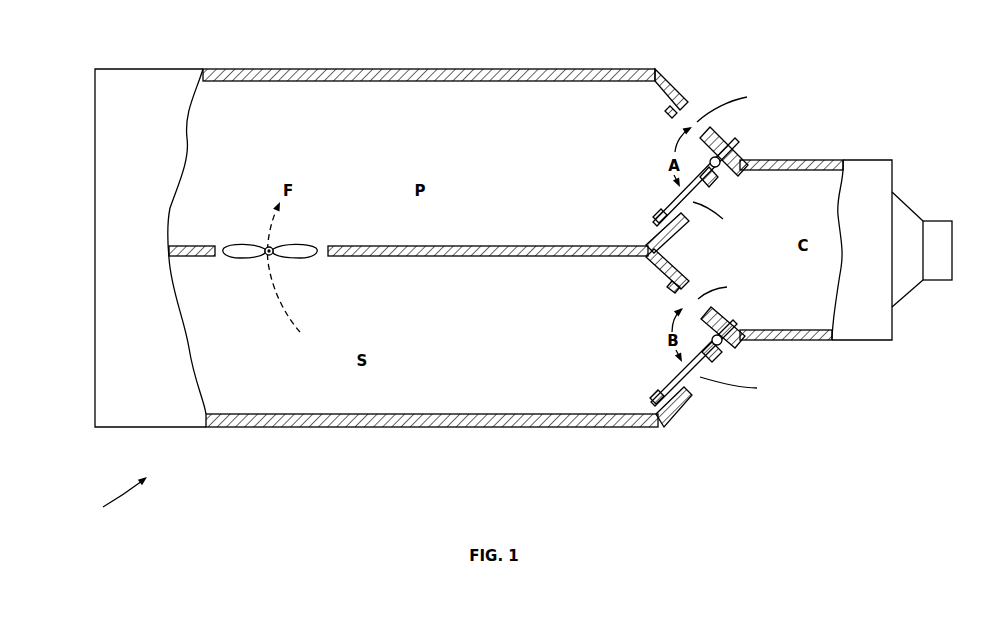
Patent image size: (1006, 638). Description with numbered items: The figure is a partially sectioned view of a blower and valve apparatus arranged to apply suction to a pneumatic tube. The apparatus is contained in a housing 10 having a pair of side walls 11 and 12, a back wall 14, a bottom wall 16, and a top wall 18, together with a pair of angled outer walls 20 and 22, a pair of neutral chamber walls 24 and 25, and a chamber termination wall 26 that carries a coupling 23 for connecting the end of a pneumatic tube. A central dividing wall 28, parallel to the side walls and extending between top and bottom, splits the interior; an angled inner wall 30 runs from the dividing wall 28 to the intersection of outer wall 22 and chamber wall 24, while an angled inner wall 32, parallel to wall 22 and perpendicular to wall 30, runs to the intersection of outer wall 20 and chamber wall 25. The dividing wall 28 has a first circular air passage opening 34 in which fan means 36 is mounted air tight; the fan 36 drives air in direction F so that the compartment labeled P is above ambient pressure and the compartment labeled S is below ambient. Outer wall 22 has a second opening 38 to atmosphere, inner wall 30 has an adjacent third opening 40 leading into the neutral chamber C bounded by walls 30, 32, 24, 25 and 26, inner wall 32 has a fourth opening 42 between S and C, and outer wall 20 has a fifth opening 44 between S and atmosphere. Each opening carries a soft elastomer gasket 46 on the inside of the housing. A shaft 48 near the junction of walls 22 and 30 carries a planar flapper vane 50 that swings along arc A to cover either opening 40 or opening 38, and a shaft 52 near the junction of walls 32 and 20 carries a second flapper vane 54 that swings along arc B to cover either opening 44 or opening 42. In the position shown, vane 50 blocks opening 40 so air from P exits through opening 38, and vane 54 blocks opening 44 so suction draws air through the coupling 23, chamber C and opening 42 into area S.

The housing 10 is at (111, 498).
The side wall 11 is at (393, 427).
The side wall 12 is at (342, 69).
The back wall 14 is at (95, 192).
The bottom wall 16 is at (425, 129).
The top wall 18 is at (145, 130).
The angled outer wall 20 is at (678, 410).
The angled outer wall 22 is at (677, 98).
The coupling 23 is at (932, 280).
The neutral chamber wall 24 is at (800, 160).
The neutral chamber wall 25 is at (800, 340).
The chamber termination wall 26 is at (893, 178).
The central dividing wall 28 is at (419, 257).
The angled inner wall 30 is at (730, 182).
The angled inner wall 32 is at (723, 320).
The first circular air passage opening 34 is at (318, 260).
The fan means 36 is at (265, 250).
The second circular opening 38 is at (732, 104).
The third circular opening 40 is at (712, 221).
The fourth circular opening 42 is at (723, 288).
The fifth circular opening 44 is at (742, 387).
The gaskets 46 is at (668, 108).
The shaft 48 is at (727, 147).
The planar flapper vane 50 is at (662, 216).
The shaft 52 is at (727, 345).
The second planar flapper vane 54 is at (655, 397).